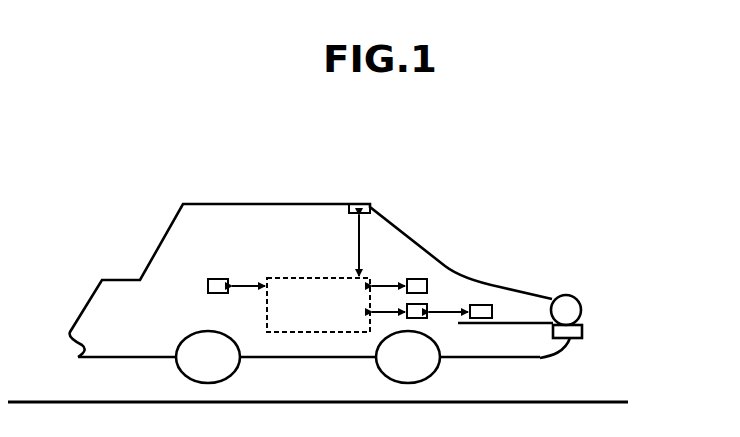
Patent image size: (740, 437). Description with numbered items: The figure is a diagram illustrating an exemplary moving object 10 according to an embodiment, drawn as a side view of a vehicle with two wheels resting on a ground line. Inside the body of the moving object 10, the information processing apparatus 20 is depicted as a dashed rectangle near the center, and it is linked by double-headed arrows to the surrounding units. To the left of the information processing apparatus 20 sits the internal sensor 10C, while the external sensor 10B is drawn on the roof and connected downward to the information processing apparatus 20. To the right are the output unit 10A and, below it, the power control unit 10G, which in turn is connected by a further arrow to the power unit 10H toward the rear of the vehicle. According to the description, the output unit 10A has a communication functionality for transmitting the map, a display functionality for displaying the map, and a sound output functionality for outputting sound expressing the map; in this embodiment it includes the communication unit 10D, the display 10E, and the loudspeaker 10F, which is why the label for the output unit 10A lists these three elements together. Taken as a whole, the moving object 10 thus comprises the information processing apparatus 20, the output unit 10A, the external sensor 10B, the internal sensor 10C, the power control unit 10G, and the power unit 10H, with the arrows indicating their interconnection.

The moving object 10 is at (240, 176).
The output unit 10A is at (546, 261).
The external sensor 10B is at (359, 204).
The internal sensor 10C is at (207, 287).
The communication unit 10D is at (417, 286).
The display 10E is at (417, 286).
The loudspeaker 10F is at (427, 282).
The power control unit 10G is at (415, 314).
The power unit 10H is at (484, 316).
The information processing apparatus 20 is at (320, 332).